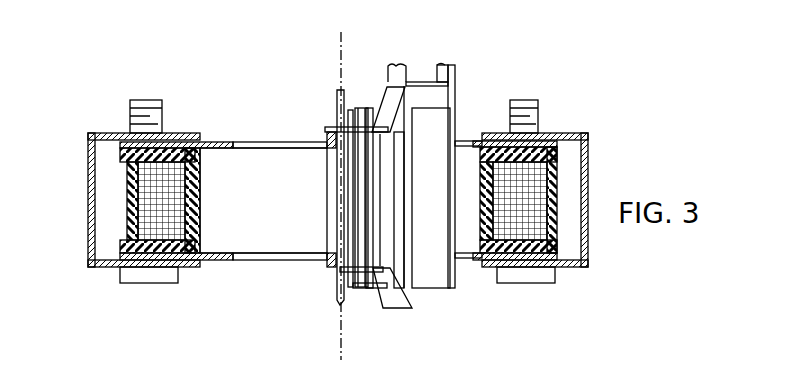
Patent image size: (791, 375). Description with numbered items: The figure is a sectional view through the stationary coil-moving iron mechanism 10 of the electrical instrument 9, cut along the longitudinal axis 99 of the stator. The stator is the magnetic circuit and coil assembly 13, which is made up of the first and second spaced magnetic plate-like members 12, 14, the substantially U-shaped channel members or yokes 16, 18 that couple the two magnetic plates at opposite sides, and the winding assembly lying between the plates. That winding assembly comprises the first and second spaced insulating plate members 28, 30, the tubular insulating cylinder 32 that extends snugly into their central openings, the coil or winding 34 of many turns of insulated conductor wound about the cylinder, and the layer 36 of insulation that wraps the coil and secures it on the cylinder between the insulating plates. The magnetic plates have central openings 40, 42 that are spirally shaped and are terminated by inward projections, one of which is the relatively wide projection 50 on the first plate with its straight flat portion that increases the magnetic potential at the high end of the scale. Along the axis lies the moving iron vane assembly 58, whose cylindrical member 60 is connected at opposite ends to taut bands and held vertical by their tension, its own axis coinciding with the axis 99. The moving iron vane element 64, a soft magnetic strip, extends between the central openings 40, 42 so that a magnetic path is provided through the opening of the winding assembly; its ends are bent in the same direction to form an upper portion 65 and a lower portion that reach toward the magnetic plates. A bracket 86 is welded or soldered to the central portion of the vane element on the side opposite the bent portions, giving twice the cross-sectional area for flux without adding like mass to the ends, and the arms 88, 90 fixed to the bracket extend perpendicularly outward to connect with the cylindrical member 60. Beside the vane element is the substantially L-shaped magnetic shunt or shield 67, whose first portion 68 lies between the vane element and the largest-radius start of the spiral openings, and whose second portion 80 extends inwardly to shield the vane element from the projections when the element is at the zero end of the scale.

The electrical instrument 9 is at (274, 325).
The stationary coil-moving iron mechanism 10 is at (262, 220).
The first magnetic plate-like member 12 is at (215, 142).
The magnetic circuit and coil assembly 13 is at (100, 268).
The second magnetic plate-like member 14 is at (215, 262).
The U-shaped channel member or yoke 16 is at (95, 160).
The U-shaped channel member or yoke 18 is at (590, 190).
The first insulating plate member 28 is at (128, 140).
The second insulating plate member 30 is at (532, 268).
The tubular insulating cylinder 32 is at (478, 240).
The coil or winding 34 is at (150, 215).
The insulation layer 36 is at (545, 178).
The central opening 40 is at (278, 142).
The central opening 42 is at (278, 260).
The inward projection 50 is at (328, 127).
The moving iron vane assembly 58 is at (383, 205).
The cylindrical member 60 is at (336, 190).
The moving iron vane element 64 is at (405, 165).
The upper portion of moving iron vane element 65 is at (400, 86).
The magnetic shunt or shield 67 is at (455, 125).
The first portion of shield 68 is at (430, 290).
The second portion of shield 80 is at (375, 290).
The bracket 86 is at (385, 244).
The arm 88 is at (359, 108).
The arm 90 is at (357, 290).
The longitudinal axis 99 is at (341, 48).